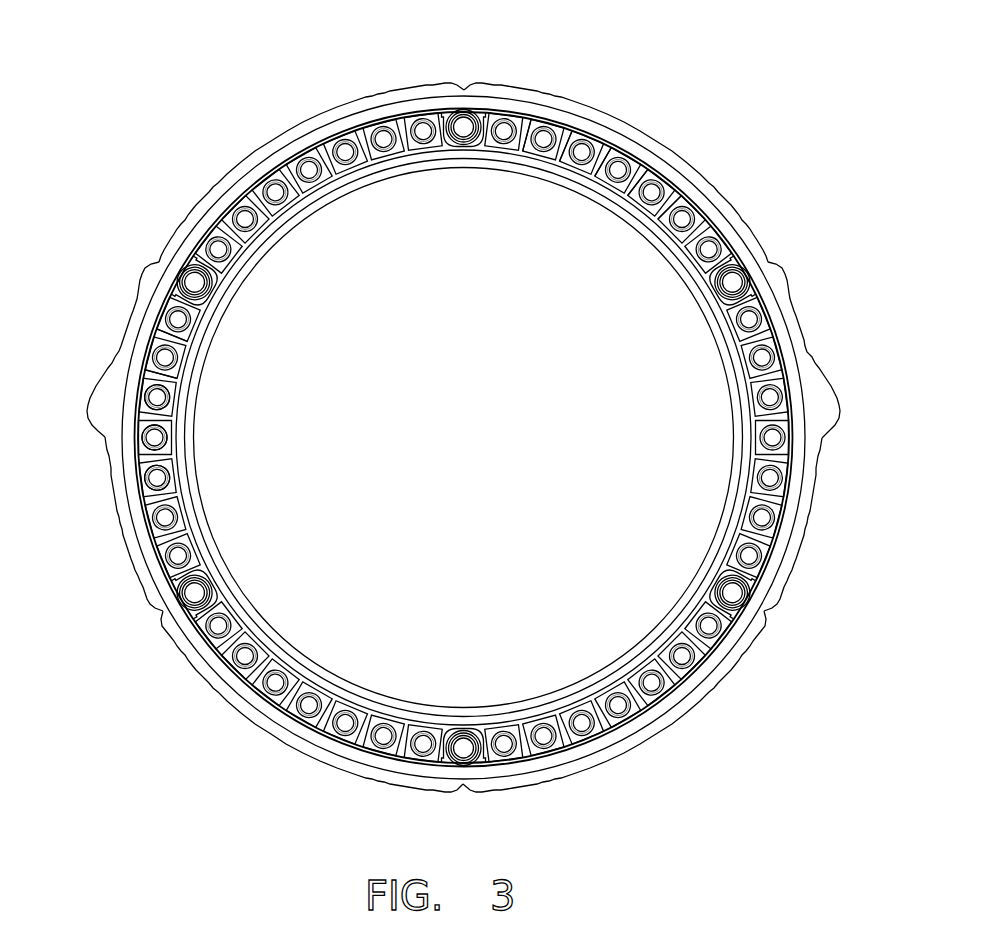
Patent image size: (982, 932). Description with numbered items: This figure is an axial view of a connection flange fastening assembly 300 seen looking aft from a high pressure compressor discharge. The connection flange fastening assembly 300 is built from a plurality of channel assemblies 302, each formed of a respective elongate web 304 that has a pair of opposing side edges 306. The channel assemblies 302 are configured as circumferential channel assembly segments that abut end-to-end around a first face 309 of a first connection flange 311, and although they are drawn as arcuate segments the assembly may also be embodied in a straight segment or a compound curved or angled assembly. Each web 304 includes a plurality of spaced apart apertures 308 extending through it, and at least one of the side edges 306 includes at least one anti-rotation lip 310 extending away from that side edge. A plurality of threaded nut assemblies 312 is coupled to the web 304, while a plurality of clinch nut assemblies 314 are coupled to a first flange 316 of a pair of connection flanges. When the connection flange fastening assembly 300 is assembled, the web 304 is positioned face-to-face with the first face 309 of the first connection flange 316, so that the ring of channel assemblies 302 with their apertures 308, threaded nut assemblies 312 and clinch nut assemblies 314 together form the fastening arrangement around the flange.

The connection flange fastening assembly 300 is at (190, 62).
The channel assemblies 302 is at (293, 130).
The elongate web 304 is at (265, 208).
The side edges 306 is at (318, 172).
The apertures 308 is at (157, 477).
The first face 309 is at (192, 543).
The anti-rotation lip 310 is at (532, 128).
The first connection flange 311 is at (148, 578).
The threaded nut assemblies 312 is at (707, 268).
The clinch nut assemblies 314 is at (463, 148).
The first flange 316 is at (257, 612).